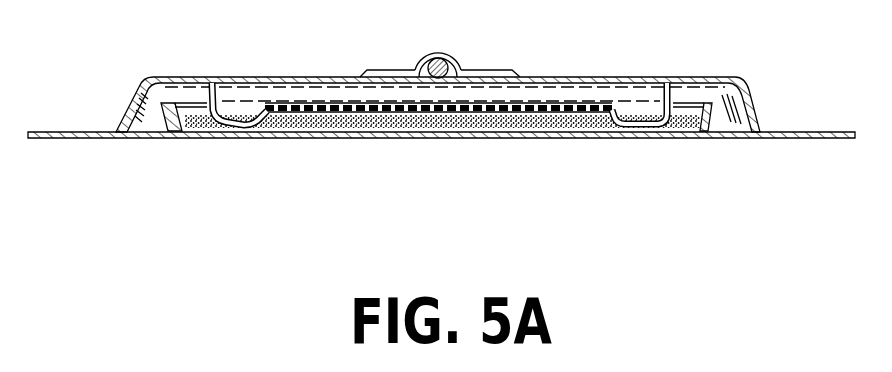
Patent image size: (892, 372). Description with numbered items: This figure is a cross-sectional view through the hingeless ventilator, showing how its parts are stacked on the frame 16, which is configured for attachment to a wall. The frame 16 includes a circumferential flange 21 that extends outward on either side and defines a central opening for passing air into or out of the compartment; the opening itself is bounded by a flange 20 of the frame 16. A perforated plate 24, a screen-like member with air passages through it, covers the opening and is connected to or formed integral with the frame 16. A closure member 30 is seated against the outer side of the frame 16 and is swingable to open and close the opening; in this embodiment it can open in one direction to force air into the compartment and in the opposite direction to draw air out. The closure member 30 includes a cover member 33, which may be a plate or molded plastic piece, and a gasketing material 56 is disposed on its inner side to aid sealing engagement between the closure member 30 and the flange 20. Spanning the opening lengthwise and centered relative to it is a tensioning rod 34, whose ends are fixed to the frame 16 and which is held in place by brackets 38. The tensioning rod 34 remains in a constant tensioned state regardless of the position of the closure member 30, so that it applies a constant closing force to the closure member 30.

The frame 16 is at (750, 101).
The flange 20 is at (642, 140).
The circumferential flange 21 is at (43, 139).
The perforated plate 24 is at (530, 142).
The closure member 30 is at (342, 146).
The cover member 33 is at (210, 140).
The tensioning rod 34 is at (433, 57).
The brackets 38 is at (497, 72).
The gasketing material 56 is at (178, 107).